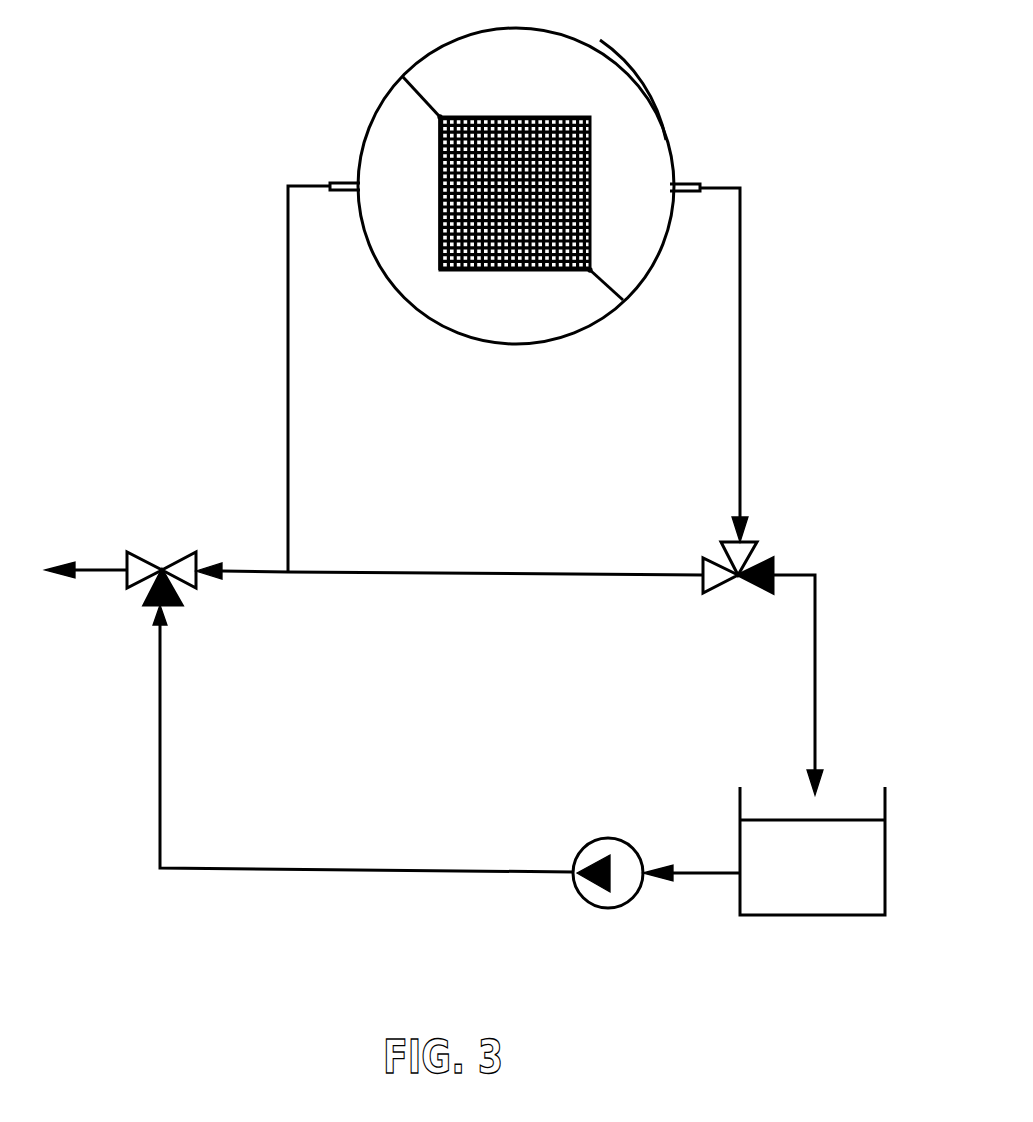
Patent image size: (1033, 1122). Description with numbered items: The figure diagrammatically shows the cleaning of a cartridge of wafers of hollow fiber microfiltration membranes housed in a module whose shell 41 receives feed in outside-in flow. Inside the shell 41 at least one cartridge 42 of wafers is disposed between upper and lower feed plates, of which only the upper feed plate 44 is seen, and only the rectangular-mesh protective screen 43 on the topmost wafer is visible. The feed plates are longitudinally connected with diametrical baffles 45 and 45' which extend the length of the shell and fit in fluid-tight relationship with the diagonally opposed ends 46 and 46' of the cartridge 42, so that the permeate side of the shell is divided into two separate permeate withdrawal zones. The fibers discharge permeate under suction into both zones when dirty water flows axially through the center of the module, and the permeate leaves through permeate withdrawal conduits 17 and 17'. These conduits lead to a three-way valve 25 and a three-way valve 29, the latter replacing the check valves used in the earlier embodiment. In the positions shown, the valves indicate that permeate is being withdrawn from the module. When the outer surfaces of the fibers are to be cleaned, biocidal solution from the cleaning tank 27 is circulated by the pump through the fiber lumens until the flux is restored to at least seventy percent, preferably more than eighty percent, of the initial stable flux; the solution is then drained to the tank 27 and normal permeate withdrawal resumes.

The permeate withdrawal conduit 17 is at (324, 377).
The permeate withdrawal conduit 17' is at (709, 363).
The 3-way valve 25 is at (180, 600).
The cleaning tank 27 is at (737, 832).
The 3-way valve 29 is at (768, 560).
The shell 41 is at (540, 345).
The cartridge 42 is at (590, 157).
The rectangular-mesh protective screen 43 is at (440, 183).
The upper feed plate 44 is at (633, 87).
The diametrical baffle 45 is at (611, 316).
The diametrical baffle 45' is at (417, 61).
The cartridge end 46 is at (616, 255).
The cartridge end 46' is at (408, 142).